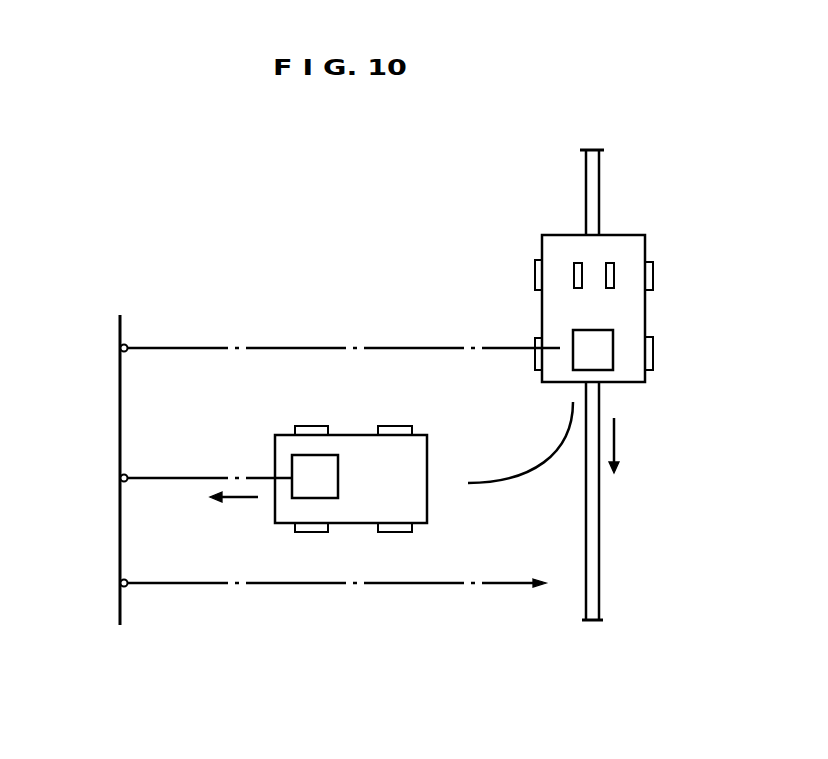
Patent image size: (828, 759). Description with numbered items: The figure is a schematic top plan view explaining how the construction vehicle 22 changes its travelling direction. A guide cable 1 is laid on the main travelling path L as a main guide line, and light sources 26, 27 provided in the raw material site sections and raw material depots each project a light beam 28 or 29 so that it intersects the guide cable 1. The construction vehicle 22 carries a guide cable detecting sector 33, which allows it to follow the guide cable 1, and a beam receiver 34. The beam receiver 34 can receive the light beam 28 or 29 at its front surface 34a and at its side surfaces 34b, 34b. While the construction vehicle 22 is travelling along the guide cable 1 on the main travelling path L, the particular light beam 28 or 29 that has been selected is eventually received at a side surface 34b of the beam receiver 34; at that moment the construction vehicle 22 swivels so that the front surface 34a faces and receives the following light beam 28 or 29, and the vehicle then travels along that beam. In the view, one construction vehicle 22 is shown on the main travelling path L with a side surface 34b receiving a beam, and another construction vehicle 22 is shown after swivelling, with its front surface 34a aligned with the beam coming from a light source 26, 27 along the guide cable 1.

The guide cable 1 is at (108, 414).
The construction vehicle 22 is at (495, 386).
The light source 26 is at (182, 467).
The light source 27 is at (127, 345).
The light beam 28 is at (348, 458).
The light beam 29 is at (326, 344).
The guide cable detecting sector 33 is at (582, 260).
The beam receiver 34 is at (606, 342).
The front surface 34a is at (611, 383).
The side surface 34b is at (572, 334).
The main travelling path L is at (599, 572).